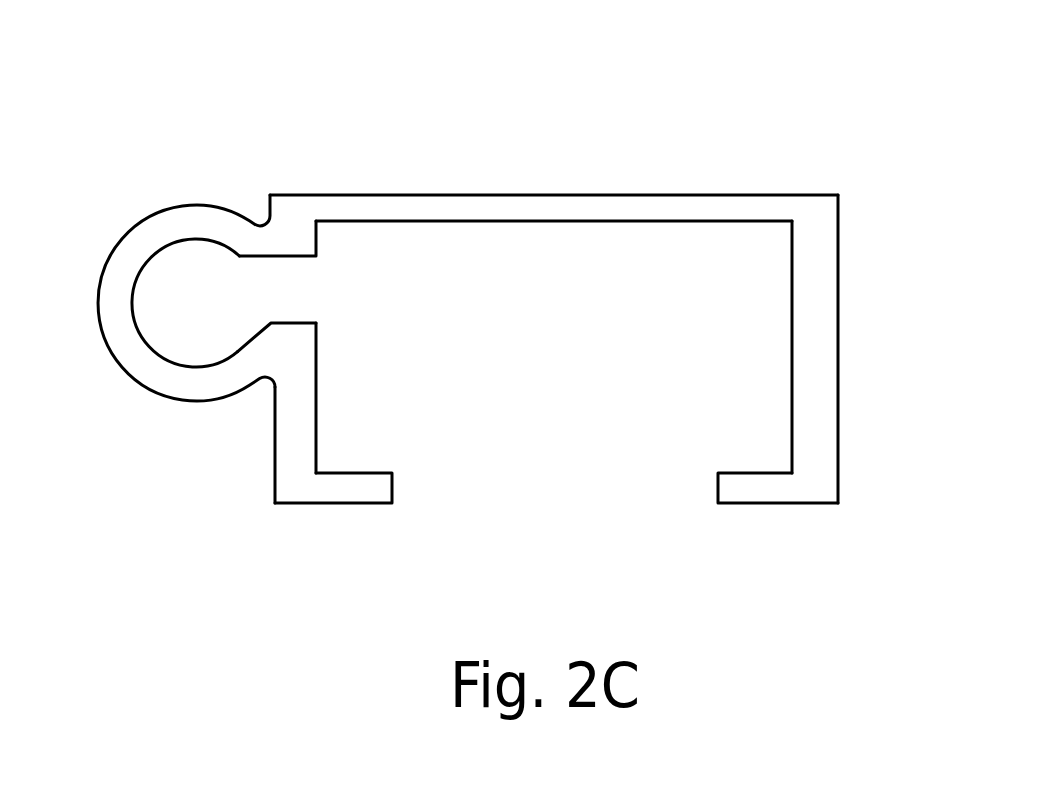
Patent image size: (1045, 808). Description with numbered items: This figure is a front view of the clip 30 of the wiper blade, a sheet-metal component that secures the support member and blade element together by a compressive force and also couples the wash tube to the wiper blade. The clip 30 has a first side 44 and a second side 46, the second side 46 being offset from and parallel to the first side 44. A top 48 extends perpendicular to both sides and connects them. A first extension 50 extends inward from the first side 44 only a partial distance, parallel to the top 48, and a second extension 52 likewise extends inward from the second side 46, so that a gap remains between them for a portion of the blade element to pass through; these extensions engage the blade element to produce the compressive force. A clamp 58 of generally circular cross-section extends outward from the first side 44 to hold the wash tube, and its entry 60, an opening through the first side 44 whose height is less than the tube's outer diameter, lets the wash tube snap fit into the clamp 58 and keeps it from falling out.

The clip 30 is at (485, 310).
The first side 44 is at (300, 430).
The second side 46 is at (813, 373).
The top 48 is at (572, 208).
The first extension 50 is at (363, 491).
The second extension 52 is at (753, 490).
The clamp 58 is at (148, 238).
The entry 60 is at (301, 288).